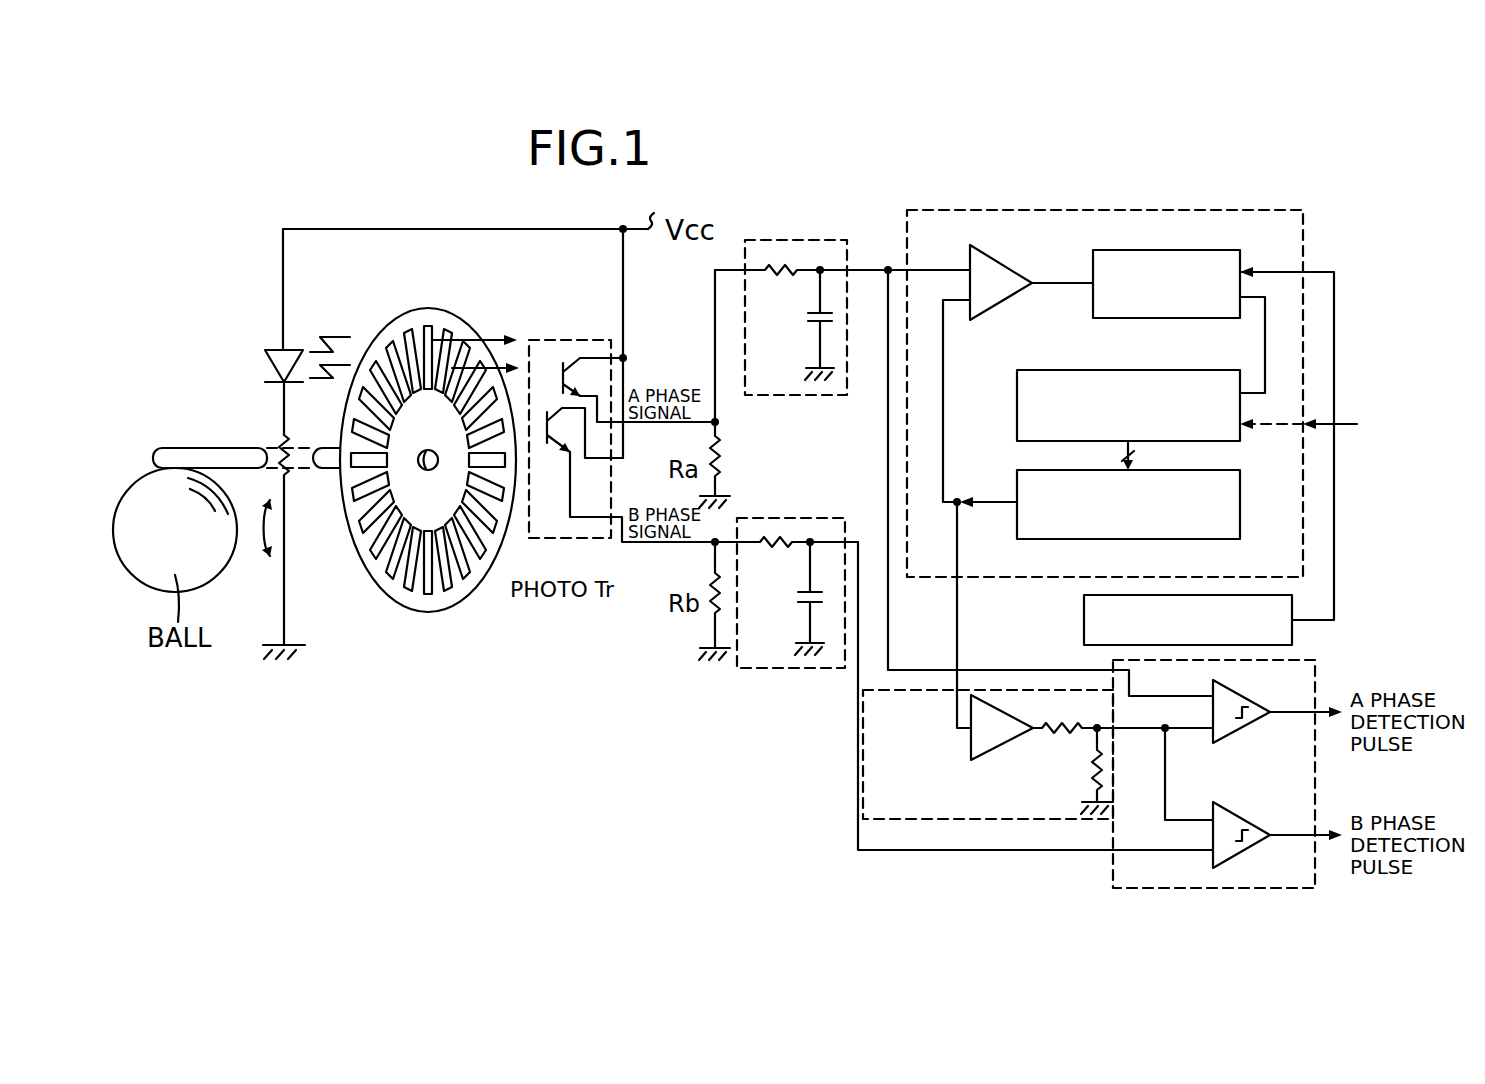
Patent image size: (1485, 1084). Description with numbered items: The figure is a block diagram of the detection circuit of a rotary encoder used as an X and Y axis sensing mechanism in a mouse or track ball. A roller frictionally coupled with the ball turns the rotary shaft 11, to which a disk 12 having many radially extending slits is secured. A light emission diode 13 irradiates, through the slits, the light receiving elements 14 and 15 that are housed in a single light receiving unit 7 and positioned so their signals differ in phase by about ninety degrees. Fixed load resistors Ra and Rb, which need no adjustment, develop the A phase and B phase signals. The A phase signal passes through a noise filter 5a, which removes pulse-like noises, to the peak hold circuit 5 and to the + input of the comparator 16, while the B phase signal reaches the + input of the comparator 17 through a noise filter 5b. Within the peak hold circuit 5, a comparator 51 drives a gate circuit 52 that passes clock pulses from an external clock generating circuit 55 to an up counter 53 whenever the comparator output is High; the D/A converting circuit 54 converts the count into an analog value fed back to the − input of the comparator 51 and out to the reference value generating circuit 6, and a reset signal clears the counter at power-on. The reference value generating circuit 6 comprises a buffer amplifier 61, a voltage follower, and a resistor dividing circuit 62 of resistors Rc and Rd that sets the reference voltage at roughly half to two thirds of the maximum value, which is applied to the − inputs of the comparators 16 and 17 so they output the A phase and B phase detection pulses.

The peak hold circuit 5 is at (1072, 210).
The noise filter 5a is at (847, 240).
The noise filter 5b is at (737, 668).
The reference value generating circuit 6 is at (863, 709).
The light receiving unit 7 is at (622, 439).
The rotary shaft 11 is at (322, 468).
The disk 12 is at (448, 597).
The light emission diode 13 is at (268, 348).
The light receiving element 14 is at (574, 362).
The light receiving element 15 is at (560, 450).
The comparator 16 is at (1250, 698).
The comparator 17 is at (1248, 820).
The comparator 51 is at (1008, 268).
The gate circuit 52 is at (1175, 250).
The up counter 53 is at (1085, 370).
The D/A converting circuit 54 is at (1240, 510).
The clock generating circuit 55 is at (1084, 633).
The buffer amplifier 61 is at (992, 695).
The resistor dividing circuit 62 is at (1085, 740).